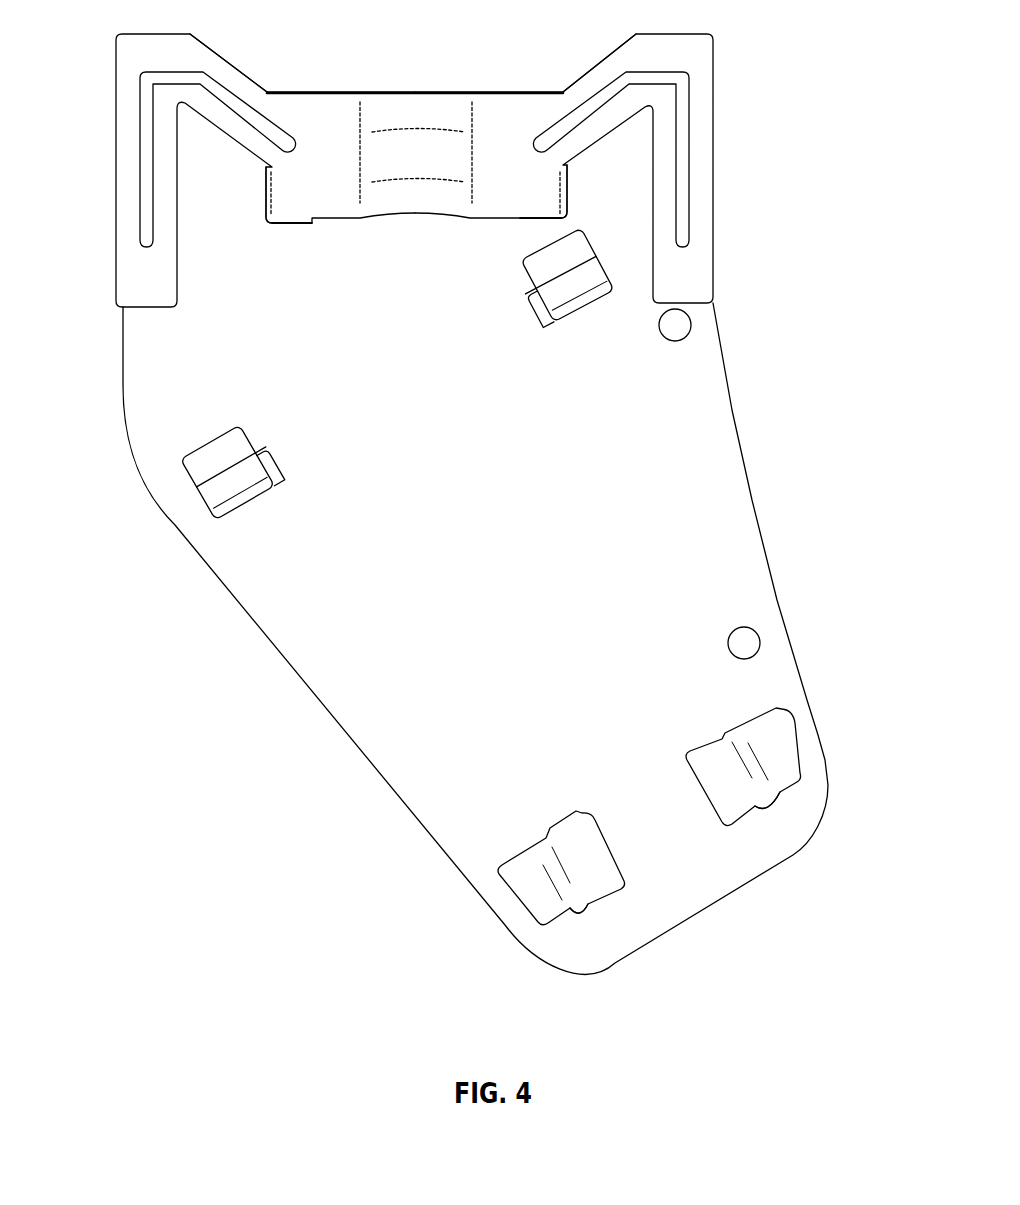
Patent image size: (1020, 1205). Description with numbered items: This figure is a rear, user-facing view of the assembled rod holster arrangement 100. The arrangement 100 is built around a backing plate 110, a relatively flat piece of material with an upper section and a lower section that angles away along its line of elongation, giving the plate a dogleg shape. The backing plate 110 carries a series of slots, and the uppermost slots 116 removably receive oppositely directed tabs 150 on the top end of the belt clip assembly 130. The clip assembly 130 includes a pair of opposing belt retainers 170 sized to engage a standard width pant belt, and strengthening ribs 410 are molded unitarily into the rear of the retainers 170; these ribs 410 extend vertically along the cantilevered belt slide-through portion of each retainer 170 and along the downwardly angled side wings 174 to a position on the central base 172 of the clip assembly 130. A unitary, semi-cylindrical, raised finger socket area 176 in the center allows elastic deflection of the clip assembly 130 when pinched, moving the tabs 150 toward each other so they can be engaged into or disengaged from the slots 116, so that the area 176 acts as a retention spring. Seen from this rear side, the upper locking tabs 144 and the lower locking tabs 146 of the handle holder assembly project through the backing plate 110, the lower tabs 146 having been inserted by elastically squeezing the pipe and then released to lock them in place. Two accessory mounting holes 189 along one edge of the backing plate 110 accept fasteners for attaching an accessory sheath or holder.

The rod holster arrangement 100 is at (744, 328).
The backing plate 110 is at (472, 580).
The slots 116 is at (287, 227).
The belt clip assembly 130 is at (450, 108).
The upper locking tabs 144 is at (238, 445).
The lower locking tabs 146 is at (787, 743).
The tabs 150 is at (265, 192).
The belt retainers 170 is at (125, 164).
The central base 172 is at (318, 112).
The side wings 174 is at (233, 82).
The finger socket area 176 is at (408, 118).
The accessory mounting holes 189 is at (665, 327).
The strengthening ribs 410 is at (145, 131).